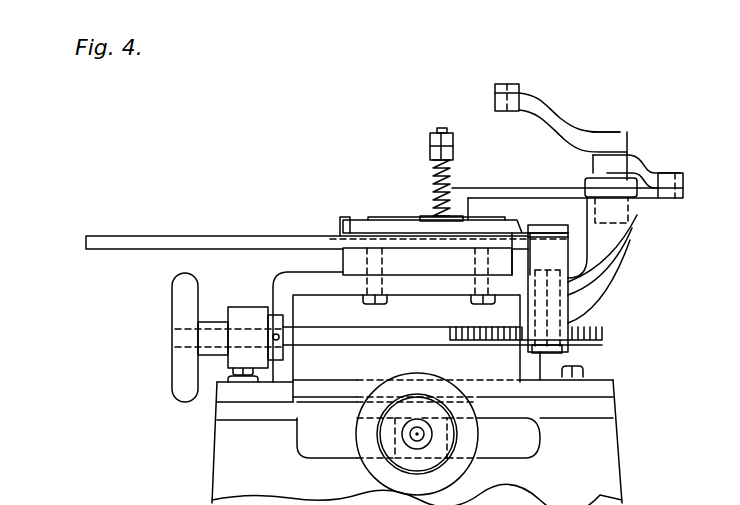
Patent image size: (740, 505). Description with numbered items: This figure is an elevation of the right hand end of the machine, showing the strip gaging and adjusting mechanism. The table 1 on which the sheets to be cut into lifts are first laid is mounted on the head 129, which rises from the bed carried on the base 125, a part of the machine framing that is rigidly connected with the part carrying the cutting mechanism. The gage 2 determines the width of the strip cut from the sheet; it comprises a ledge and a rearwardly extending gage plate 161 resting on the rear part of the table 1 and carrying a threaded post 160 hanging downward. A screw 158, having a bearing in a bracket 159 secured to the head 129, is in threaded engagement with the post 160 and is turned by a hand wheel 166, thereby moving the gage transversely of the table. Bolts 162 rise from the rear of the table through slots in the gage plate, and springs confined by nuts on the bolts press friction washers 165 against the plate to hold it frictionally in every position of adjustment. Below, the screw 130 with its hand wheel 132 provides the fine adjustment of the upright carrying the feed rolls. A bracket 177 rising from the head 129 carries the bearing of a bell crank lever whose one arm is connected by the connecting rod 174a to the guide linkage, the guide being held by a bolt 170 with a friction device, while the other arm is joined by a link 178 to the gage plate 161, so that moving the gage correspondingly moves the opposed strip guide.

The table 1 is at (84, 243).
The gage 2 is at (344, 218).
The base 125 is at (217, 404).
The head 129 is at (396, 325).
The screw 130 is at (413, 437).
The hand wheel 132 is at (457, 468).
The screw 158 is at (350, 338).
The bracket 159 is at (237, 307).
The post 160 is at (555, 313).
The gage plate 161 is at (338, 224).
The bolts 162 is at (452, 167).
The friction washers 165 is at (398, 190).
The hand wheel 166 is at (172, 316).
The bolt 170 is at (638, 157).
The connecting rod 174a is at (500, 83).
The bracket 177 is at (620, 240).
The link 178 is at (650, 198).